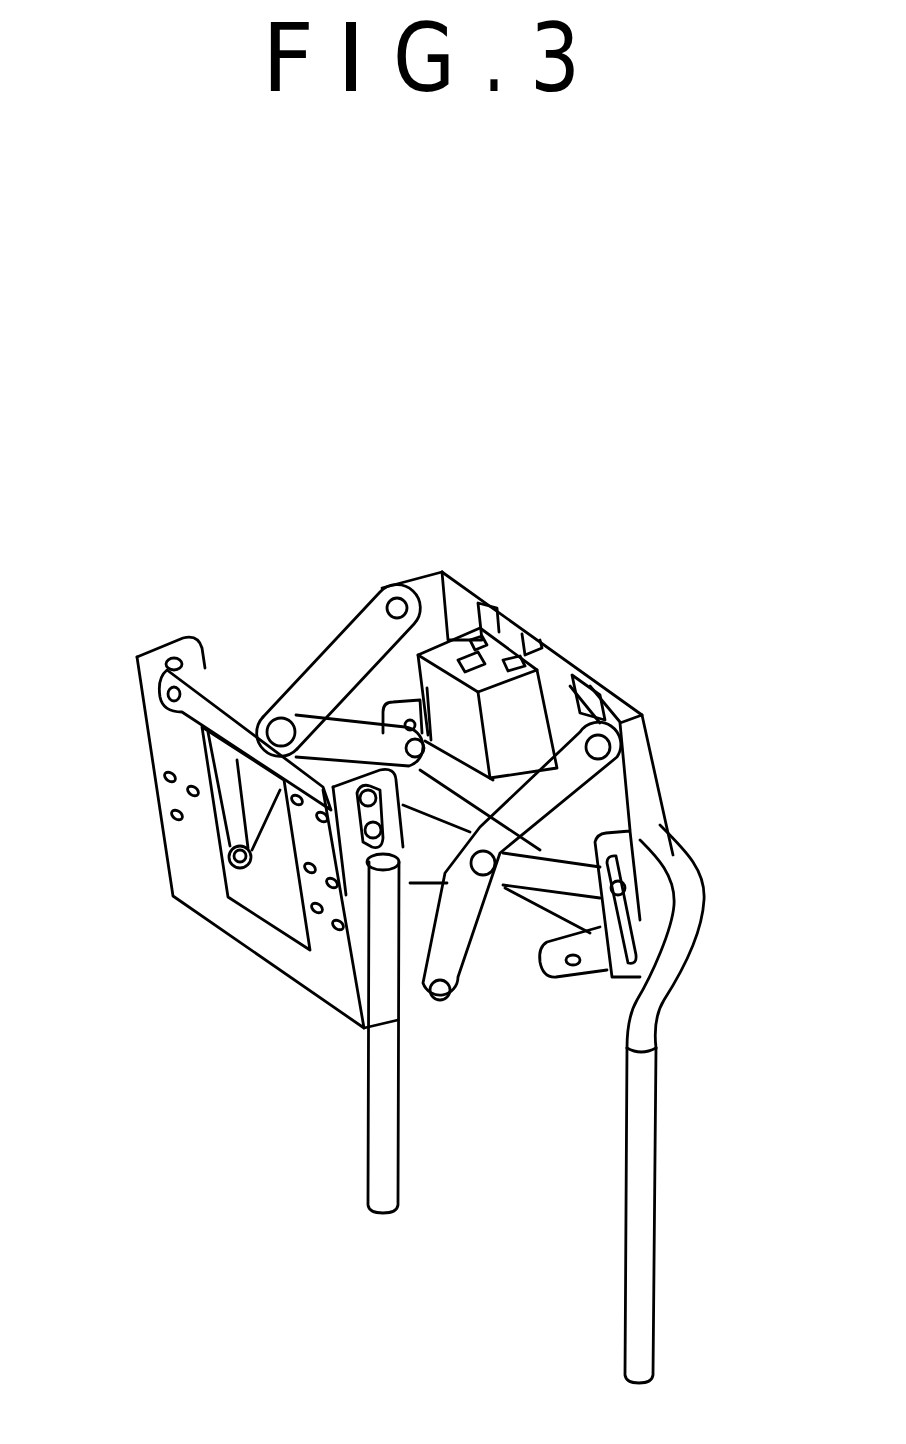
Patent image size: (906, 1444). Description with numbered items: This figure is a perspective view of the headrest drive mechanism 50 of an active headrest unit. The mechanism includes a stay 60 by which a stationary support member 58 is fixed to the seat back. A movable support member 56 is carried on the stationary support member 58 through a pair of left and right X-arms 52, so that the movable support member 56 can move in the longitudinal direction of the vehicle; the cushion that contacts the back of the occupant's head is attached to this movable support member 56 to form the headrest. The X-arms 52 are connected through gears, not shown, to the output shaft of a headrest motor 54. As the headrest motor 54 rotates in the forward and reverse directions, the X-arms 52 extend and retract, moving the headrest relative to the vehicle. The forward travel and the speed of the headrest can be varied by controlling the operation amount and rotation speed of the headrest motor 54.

The headrest drive mechanism 50 is at (230, 985).
The X-arms 52 is at (318, 665).
The headrest motor 54 is at (508, 637).
The movable support member 56 is at (183, 855).
The stationary support member 58 is at (643, 777).
The stay 60 is at (655, 995).